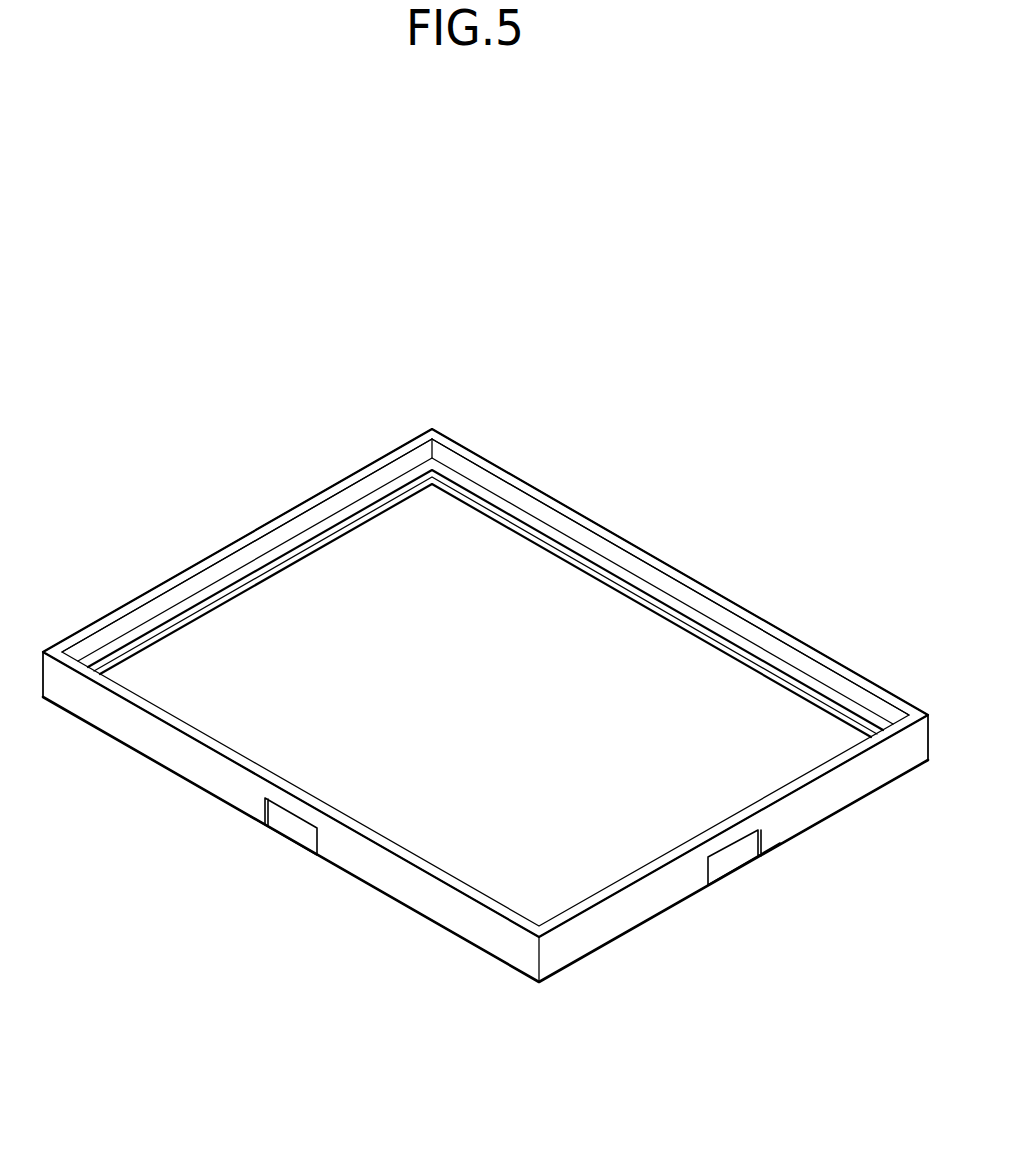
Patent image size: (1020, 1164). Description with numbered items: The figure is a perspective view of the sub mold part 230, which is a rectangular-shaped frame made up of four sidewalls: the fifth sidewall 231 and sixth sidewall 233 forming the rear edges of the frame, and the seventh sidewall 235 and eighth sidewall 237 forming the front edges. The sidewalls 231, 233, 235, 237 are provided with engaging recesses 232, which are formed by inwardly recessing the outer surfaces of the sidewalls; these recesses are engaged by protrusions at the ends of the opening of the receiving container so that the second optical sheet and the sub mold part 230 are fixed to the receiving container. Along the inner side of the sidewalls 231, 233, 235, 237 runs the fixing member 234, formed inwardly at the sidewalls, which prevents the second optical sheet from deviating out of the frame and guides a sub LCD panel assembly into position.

The sub mold part 230 is at (487, 400).
The fifth sidewall 231 is at (701, 580).
The engaging recess 232 is at (290, 832).
The sixth sidewall 233 is at (229, 547).
The fixing member 234 is at (301, 546).
The seventh sidewall 235 is at (806, 801).
The eighth sidewall 237 is at (215, 781).